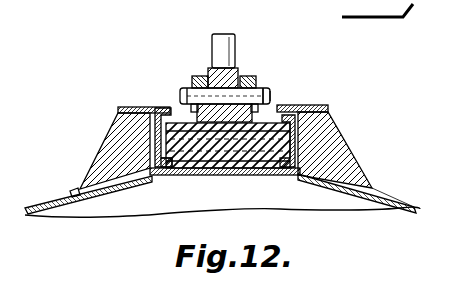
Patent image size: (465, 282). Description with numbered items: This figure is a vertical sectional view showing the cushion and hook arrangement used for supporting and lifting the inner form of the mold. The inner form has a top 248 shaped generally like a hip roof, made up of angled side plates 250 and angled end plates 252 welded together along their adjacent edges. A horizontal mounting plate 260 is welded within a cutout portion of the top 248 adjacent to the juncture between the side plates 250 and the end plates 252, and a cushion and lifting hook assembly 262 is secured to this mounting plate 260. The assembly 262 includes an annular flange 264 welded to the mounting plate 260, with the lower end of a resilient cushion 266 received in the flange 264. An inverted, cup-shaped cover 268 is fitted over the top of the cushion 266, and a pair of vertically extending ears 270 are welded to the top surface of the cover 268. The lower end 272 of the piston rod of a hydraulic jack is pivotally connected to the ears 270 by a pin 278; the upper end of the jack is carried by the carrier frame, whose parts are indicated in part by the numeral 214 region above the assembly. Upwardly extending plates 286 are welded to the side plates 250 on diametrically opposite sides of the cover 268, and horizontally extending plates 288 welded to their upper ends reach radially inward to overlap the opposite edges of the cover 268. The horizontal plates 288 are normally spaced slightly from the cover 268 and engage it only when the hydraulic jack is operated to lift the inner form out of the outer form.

The shaft 214 is at (235, 8).
The top 248 is at (397, 190).
The angled side plates 250 is at (36, 208).
The angled end plates 252 is at (144, 213).
The horizontal mounting plate 260 is at (217, 173).
The cushion and lifting hook assembly 262 is at (281, 89).
The annular flange 264 is at (167, 172).
The resilient cushion 266 is at (263, 171).
The inverted cup-shaped cover 268 is at (180, 124).
The vertically extending ears 270 is at (198, 76).
The lower end of piston rod 272 is at (272, 100).
The pin 278 is at (262, 88).
The upwardly extending plates 286 is at (104, 141).
The horizontally extending plates 288 is at (112, 107).